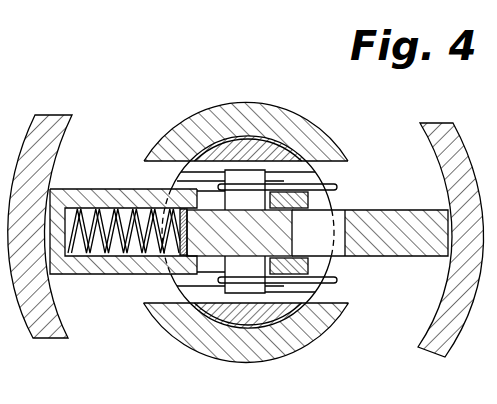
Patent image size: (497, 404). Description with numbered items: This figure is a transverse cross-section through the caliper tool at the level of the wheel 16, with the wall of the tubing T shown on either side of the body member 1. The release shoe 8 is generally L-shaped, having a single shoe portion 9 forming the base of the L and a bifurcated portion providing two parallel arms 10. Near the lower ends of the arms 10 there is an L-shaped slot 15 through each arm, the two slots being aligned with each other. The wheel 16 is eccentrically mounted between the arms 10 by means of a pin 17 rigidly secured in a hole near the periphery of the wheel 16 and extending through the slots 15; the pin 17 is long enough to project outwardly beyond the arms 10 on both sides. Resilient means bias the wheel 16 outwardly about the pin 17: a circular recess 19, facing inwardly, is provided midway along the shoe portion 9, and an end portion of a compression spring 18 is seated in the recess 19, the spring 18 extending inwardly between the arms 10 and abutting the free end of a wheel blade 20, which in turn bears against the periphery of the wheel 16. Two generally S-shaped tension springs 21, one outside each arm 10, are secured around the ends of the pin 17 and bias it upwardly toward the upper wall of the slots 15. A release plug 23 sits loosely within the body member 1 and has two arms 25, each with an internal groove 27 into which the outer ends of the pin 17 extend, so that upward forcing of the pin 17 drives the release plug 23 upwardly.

The body member 1 is at (315, 117).
The release shoe 8 is at (98, 183).
The shoe portion 9 is at (77, 193).
The arms 10 is at (311, 199).
The L-shaped slot 15 is at (211, 196).
The wheel 16 is at (408, 218).
The pin 17 is at (240, 290).
The compression spring 18 is at (109, 229).
The circular recess 19 is at (118, 226).
The wheel blade 20 is at (178, 202).
The tension springs 21 is at (338, 186).
The release plug 23 is at (272, 141).
The plug arms 25 is at (222, 152).
The internal groove 27 is at (302, 172).
The tubing T is at (50, 326).